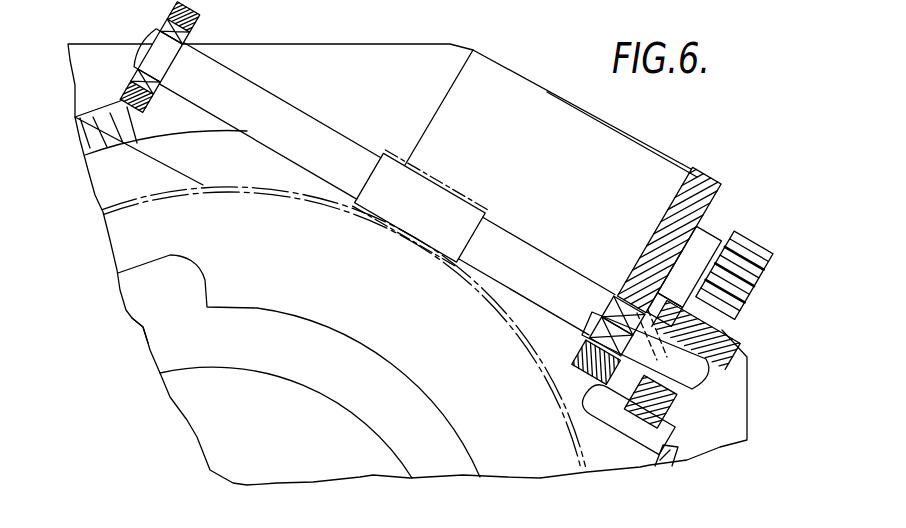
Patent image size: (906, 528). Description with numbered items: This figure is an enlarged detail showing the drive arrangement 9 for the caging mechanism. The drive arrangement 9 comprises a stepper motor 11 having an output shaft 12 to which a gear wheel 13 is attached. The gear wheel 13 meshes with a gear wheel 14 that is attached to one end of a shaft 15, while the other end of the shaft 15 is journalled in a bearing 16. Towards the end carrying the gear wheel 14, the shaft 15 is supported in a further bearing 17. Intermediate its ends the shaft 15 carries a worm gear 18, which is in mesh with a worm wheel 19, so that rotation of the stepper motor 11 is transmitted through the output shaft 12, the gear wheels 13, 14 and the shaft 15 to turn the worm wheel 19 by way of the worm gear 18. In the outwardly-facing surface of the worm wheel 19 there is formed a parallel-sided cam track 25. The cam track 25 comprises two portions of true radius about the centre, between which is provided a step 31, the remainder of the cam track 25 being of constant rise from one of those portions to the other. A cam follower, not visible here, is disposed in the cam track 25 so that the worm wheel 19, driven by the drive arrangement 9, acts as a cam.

The drive arrangement 9 is at (413, 78).
The stepper motor 11 is at (563, 181).
The output shaft 12 is at (707, 278).
The gear wheel 13 is at (748, 262).
The gear wheel 14 is at (708, 326).
The shaft 15 is at (510, 265).
The bearing 16 is at (193, 38).
The further bearing 17 is at (618, 292).
The worm gear 18 is at (408, 202).
The worm wheel 19 is at (335, 304).
The cam track 25 is at (260, 310).
The step 31 is at (153, 344).